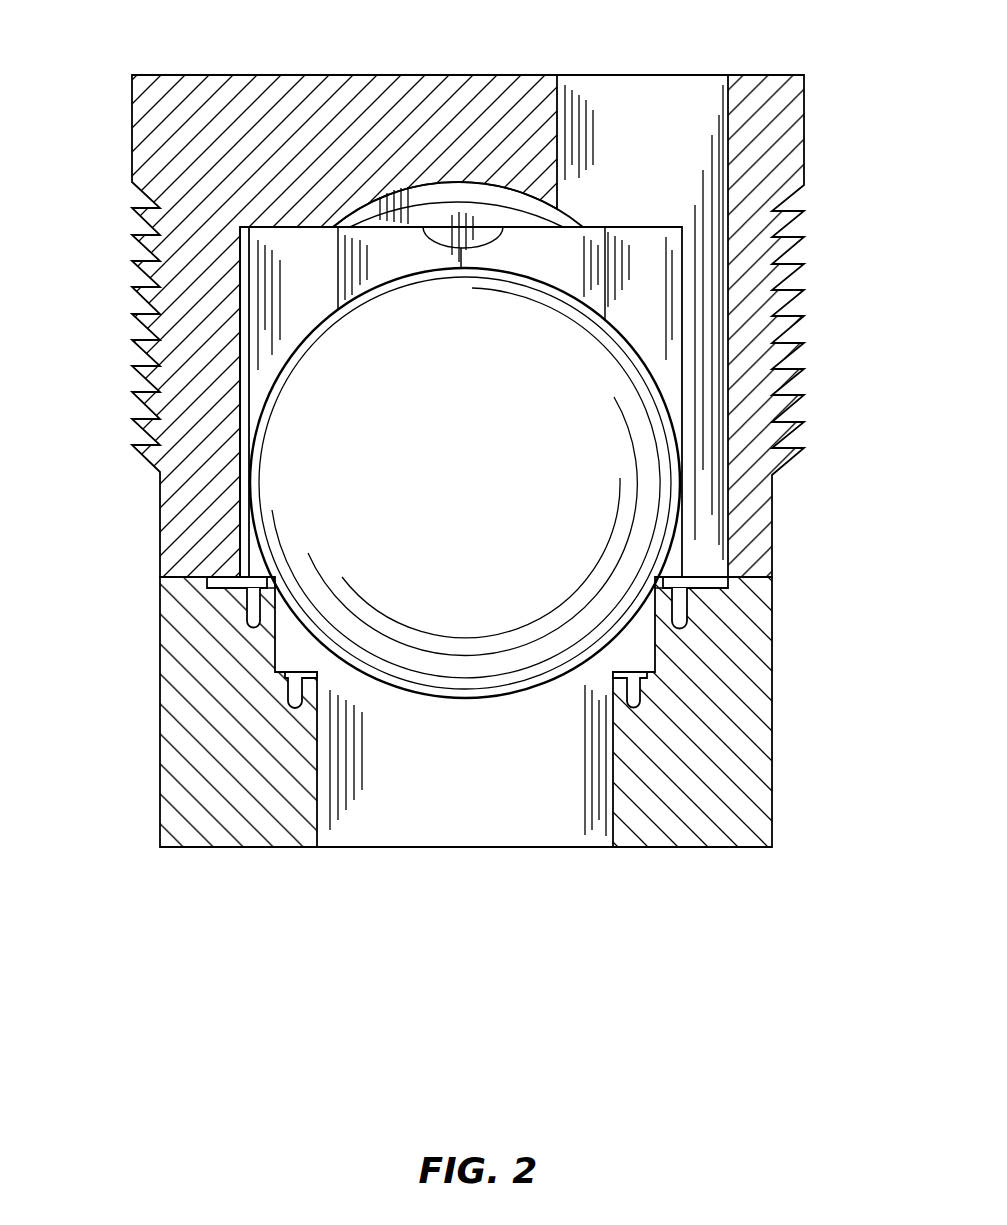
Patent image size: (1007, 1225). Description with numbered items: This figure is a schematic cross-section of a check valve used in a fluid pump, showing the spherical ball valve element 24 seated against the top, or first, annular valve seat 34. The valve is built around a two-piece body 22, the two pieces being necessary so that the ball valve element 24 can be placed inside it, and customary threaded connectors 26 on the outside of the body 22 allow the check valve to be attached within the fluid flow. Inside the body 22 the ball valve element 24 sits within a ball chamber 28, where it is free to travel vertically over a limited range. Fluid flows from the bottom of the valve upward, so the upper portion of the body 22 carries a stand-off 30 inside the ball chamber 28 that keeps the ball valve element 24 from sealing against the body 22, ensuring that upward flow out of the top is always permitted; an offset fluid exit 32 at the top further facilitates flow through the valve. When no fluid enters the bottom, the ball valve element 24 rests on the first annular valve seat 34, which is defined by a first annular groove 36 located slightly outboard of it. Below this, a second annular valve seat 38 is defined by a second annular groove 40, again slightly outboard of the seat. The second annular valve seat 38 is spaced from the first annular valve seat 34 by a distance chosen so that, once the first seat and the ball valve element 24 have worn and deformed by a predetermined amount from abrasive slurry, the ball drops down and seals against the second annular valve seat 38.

The two-piece body 22 is at (178, 344).
The ball valve element 24 is at (477, 496).
The threaded connectors 26 is at (800, 348).
The ball chamber 28 is at (253, 224).
The stand-off 30 is at (470, 247).
The offset fluid exit 32 is at (728, 102).
The first annular valve seat 34 is at (279, 596).
The first annular groove 36 is at (252, 620).
The second annular valve seat 38 is at (325, 687).
The second annular groove 40 is at (276, 693).